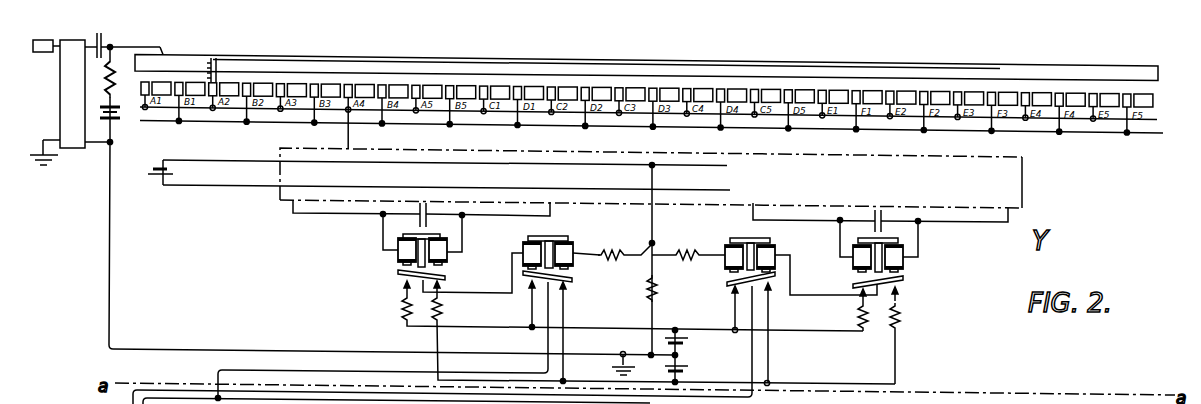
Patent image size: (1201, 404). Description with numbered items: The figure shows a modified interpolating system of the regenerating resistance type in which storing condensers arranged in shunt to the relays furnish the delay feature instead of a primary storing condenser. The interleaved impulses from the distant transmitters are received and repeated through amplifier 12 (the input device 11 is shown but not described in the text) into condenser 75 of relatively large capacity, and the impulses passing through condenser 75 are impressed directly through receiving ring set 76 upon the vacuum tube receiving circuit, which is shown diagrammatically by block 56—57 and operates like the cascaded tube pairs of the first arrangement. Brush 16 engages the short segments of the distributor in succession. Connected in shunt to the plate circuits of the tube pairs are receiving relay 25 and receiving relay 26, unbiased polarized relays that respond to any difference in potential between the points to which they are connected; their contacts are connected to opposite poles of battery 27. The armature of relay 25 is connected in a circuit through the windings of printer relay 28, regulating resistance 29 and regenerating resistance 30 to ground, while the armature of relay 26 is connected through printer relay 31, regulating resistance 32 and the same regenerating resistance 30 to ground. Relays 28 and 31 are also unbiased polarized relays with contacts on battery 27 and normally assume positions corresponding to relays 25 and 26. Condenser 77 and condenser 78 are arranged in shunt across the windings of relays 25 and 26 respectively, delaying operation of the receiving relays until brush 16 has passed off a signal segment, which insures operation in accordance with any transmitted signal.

The sending key 11 is at (44, 53).
The amplifier 12 is at (60, 118).
The condenser 75 is at (103, 39).
The brush 16 is at (218, 59).
The receiving ring set 76 is at (1150, 88).
The vacuum tube receiving circuit block 56 is at (620, 178).
The vacuum tube receiving circuit block 57 is at (620, 178).
The condenser 77 is at (418, 219).
The receiving relay 25 is at (405, 256).
The printer relay 28 is at (605, 240).
The regulating resistance 29 is at (612, 264).
The regulating resistance 32 is at (688, 264).
The regenerating resistance 30 is at (645, 298).
The printer relay 31 is at (722, 250).
The condenser 78 is at (888, 228).
The receiving relay 26 is at (903, 263).
The battery 27 is at (690, 354).